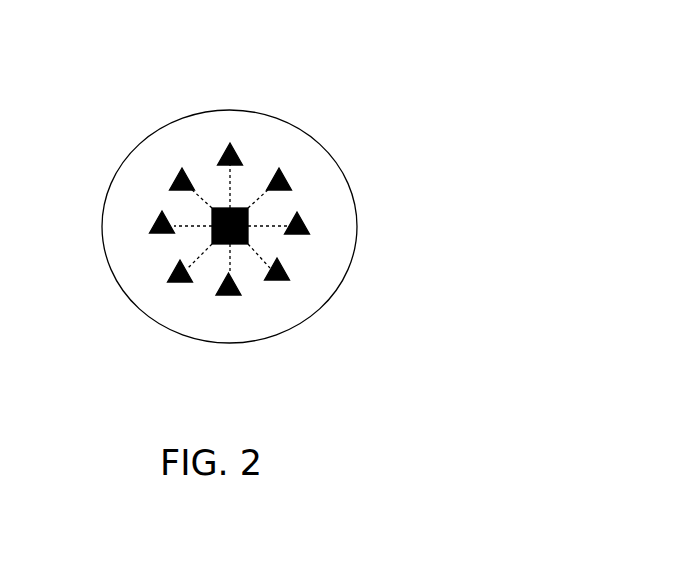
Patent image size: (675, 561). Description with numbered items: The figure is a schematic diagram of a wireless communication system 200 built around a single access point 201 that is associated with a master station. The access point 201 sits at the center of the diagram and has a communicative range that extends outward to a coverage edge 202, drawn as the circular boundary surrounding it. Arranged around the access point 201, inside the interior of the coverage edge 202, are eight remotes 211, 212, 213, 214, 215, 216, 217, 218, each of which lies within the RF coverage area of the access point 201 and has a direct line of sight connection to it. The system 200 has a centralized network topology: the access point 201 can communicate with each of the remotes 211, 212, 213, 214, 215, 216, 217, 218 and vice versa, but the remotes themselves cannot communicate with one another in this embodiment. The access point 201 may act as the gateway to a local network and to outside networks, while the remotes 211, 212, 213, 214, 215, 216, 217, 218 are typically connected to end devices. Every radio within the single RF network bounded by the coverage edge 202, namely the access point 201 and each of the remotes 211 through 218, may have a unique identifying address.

The wireless communication system 200 is at (455, 97).
The access point 201 is at (212, 207).
The coverage edge 202 is at (337, 167).
The remote 211 is at (220, 160).
The remote 212 is at (172, 185).
The remote 213 is at (151, 231).
The remote 214 is at (180, 283).
The remote 215 is at (234, 295).
The remote 216 is at (285, 272).
The remote 217 is at (300, 217).
The remote 218 is at (284, 175).